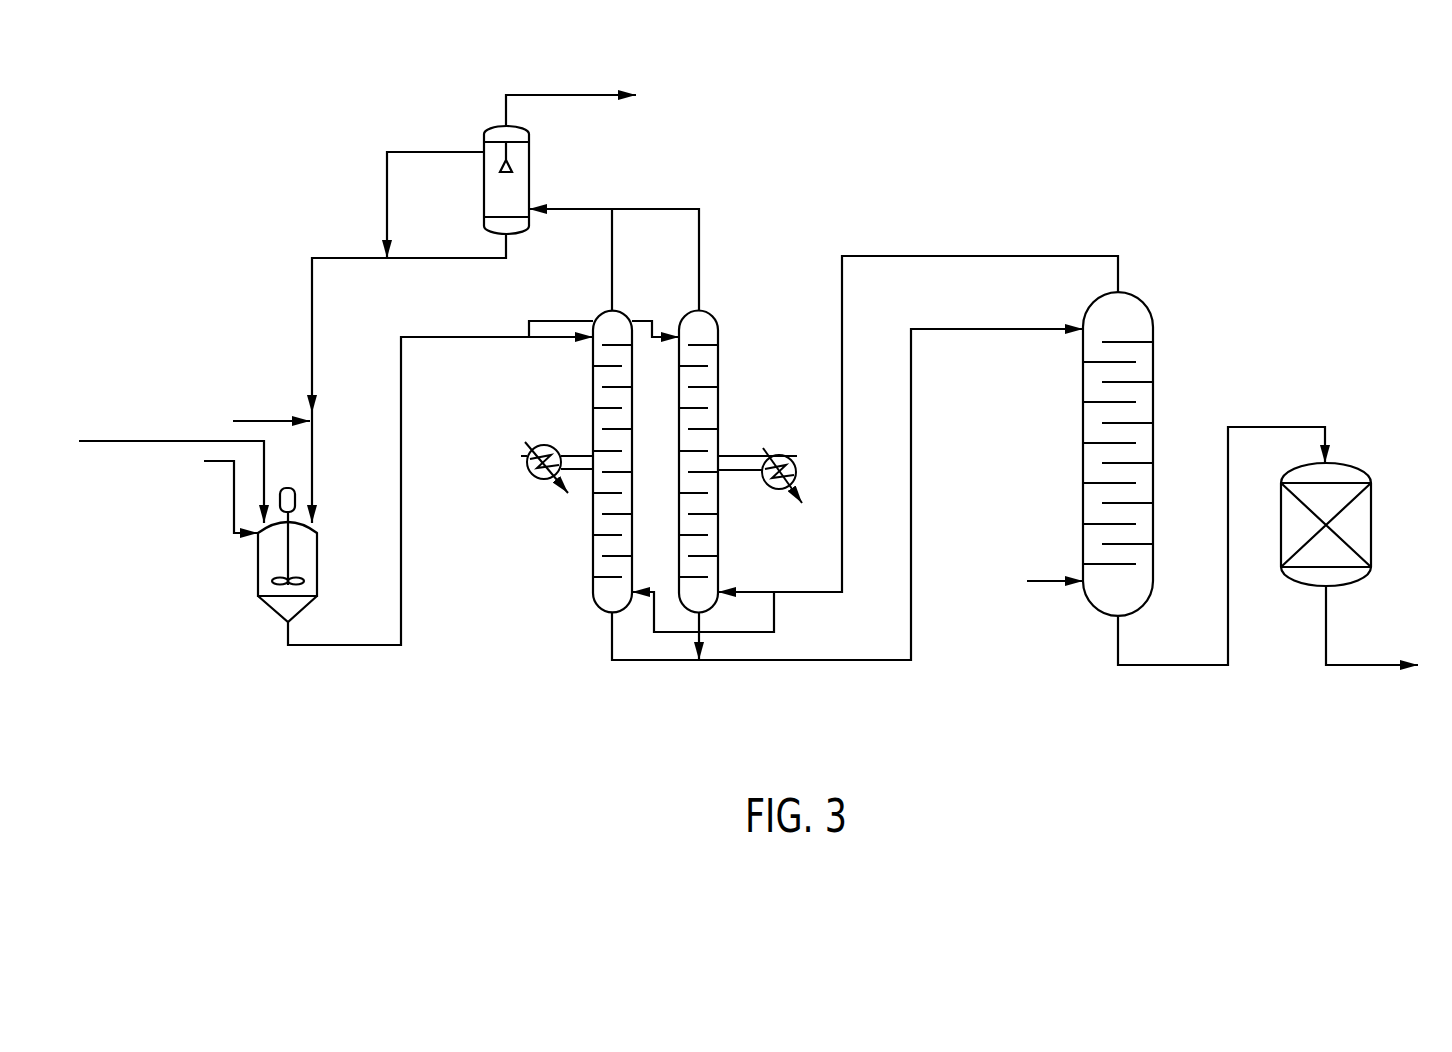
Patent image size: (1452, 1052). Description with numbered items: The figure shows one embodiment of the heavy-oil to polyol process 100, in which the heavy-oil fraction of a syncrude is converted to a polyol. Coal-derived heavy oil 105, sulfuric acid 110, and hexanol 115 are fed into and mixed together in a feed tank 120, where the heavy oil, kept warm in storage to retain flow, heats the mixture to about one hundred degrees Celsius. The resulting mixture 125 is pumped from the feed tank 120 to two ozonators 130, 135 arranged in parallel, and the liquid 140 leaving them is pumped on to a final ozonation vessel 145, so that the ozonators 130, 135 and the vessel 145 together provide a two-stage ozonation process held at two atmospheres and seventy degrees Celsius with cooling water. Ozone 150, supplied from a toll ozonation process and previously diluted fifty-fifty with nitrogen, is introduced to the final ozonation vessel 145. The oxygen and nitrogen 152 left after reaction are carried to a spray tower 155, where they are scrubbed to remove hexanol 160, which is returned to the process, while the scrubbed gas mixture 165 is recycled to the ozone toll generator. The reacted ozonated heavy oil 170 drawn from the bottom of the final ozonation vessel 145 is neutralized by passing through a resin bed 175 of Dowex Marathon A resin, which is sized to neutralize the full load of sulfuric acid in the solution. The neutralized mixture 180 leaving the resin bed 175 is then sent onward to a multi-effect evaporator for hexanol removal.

The heavy-oil to polyol process 100 is at (205, 110).
The coal-derived heavy oil 105 is at (217, 465).
The sulfuric acid 110 is at (110, 440).
The hexanol 115 is at (272, 420).
The feed tank 120 is at (257, 577).
The mixture 125 is at (400, 523).
The ozonator 130 is at (592, 395).
The ozonator 135 is at (722, 378).
The liquid 140 is at (728, 662).
The final ozonation vessel 145 is at (1082, 392).
The ozone 150 is at (1045, 578).
The oxygen and nitrogen 152 is at (620, 207).
The spray tower 155 is at (529, 157).
The hexanol 160 is at (330, 258).
The gas mixture 165 is at (557, 92).
The ozonated heavy oil 170 is at (1165, 662).
The resin bed 175 is at (1372, 492).
The mixture 180 is at (1363, 662).